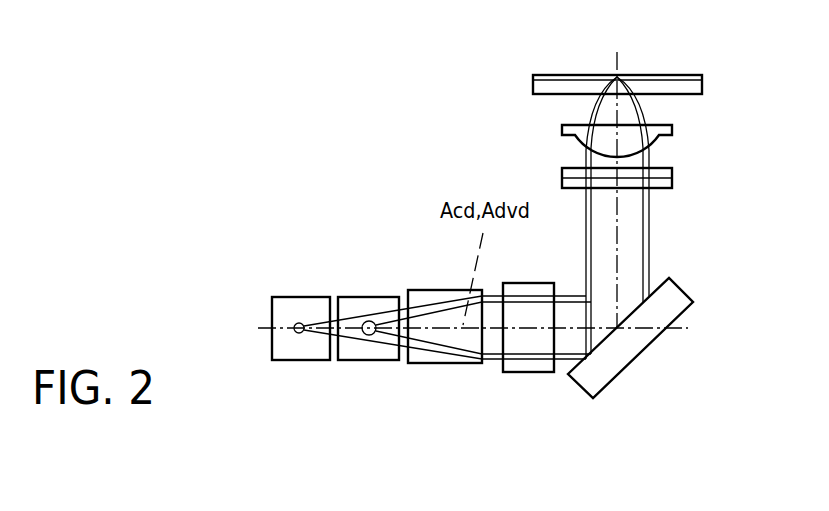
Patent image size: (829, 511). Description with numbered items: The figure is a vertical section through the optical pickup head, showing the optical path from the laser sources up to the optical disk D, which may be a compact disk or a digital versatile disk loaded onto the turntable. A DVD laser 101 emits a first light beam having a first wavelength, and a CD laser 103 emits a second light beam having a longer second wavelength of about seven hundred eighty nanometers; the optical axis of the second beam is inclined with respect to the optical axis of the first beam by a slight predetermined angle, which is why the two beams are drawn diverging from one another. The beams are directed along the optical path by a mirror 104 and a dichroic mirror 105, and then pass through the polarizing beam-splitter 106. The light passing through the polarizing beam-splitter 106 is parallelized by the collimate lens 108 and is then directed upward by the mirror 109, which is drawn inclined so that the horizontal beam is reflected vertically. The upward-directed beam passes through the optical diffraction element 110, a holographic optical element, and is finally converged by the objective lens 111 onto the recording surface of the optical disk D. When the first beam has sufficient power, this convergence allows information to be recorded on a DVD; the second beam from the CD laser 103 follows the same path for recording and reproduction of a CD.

The DVD laser 101 is at (299, 334).
The CD laser 103 is at (370, 335).
The mirror 104 is at (290, 296).
The dichroic mirror 105 is at (358, 296).
The polarizing beam-splitter 106 is at (426, 290).
The collimate lens 108 is at (537, 283).
The mirror 109 is at (638, 362).
The optical diffraction element 110 is at (672, 172).
The objective lens 111 is at (672, 127).
The optical disk D is at (663, 75).